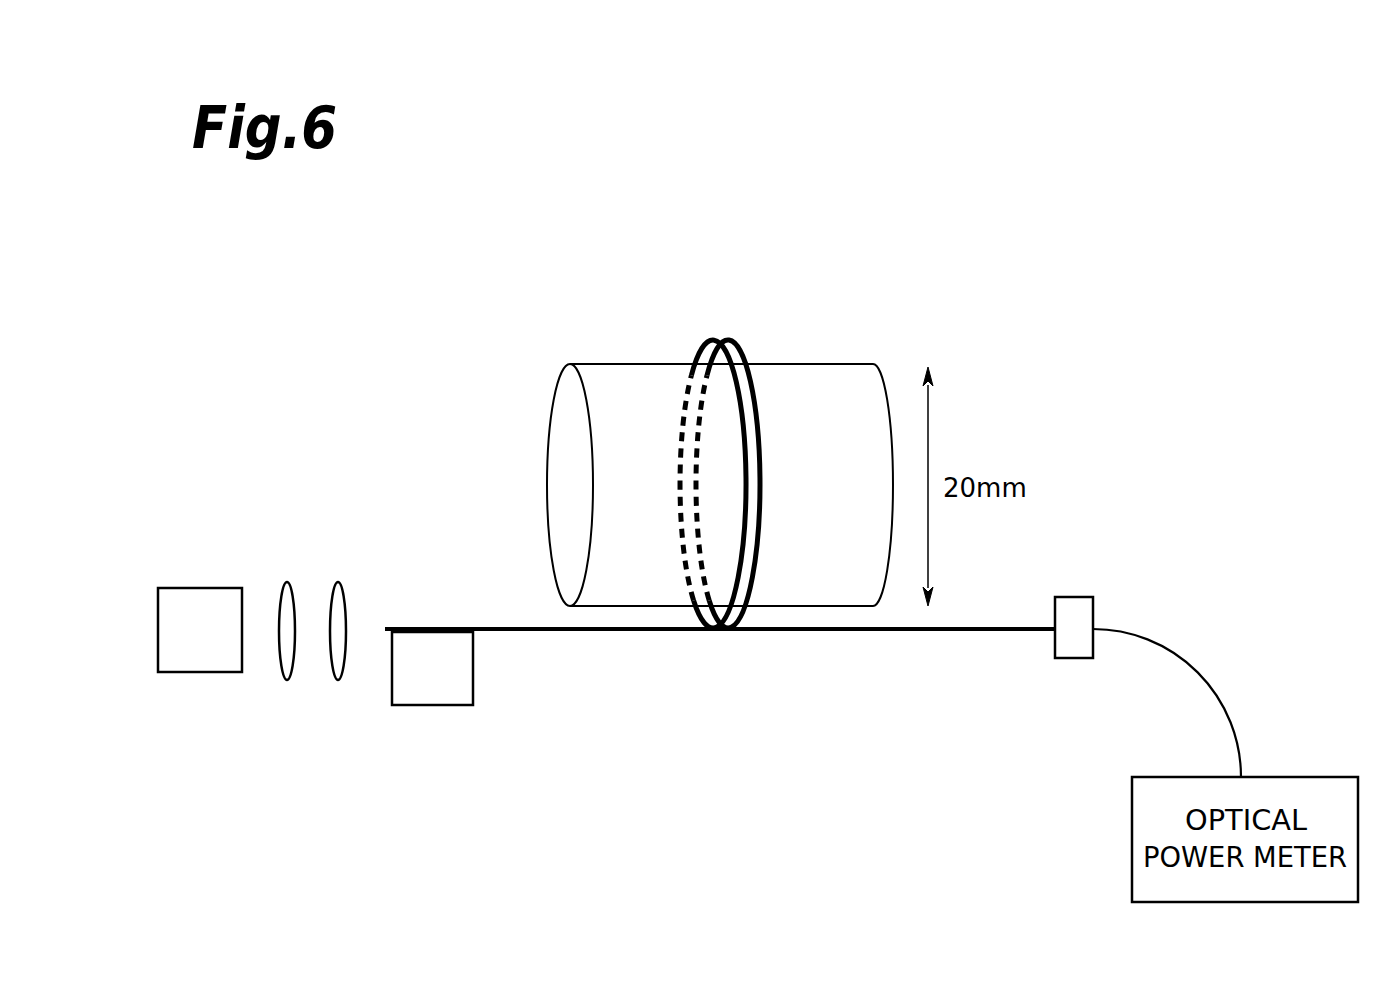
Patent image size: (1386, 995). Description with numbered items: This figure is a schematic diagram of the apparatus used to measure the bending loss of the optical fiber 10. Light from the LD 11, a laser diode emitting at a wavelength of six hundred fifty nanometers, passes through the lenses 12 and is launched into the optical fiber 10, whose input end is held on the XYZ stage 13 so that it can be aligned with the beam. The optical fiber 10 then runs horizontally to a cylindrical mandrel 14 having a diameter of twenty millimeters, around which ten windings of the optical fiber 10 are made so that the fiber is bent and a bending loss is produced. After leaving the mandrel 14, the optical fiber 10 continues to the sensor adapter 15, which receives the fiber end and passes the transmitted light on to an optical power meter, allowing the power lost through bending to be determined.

The optical fiber 10 is at (760, 462).
The LD 11 is at (200, 673).
The lenses 12 is at (338, 684).
The XYZ stage 13 is at (437, 706).
The mandrel 14 is at (818, 363).
The sensor adapter 15 is at (1077, 659).